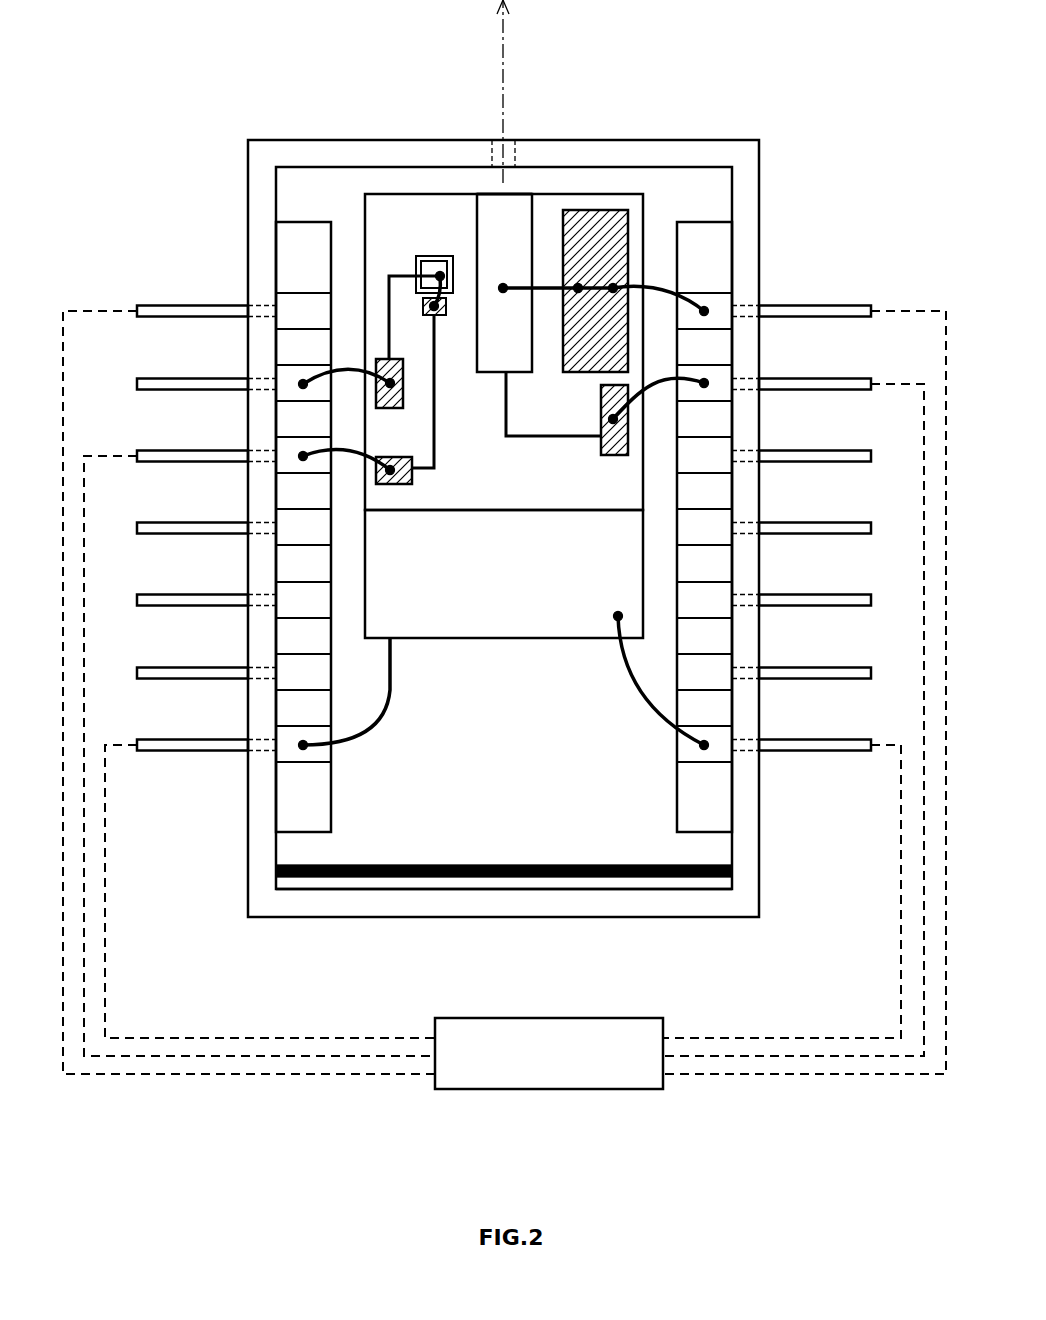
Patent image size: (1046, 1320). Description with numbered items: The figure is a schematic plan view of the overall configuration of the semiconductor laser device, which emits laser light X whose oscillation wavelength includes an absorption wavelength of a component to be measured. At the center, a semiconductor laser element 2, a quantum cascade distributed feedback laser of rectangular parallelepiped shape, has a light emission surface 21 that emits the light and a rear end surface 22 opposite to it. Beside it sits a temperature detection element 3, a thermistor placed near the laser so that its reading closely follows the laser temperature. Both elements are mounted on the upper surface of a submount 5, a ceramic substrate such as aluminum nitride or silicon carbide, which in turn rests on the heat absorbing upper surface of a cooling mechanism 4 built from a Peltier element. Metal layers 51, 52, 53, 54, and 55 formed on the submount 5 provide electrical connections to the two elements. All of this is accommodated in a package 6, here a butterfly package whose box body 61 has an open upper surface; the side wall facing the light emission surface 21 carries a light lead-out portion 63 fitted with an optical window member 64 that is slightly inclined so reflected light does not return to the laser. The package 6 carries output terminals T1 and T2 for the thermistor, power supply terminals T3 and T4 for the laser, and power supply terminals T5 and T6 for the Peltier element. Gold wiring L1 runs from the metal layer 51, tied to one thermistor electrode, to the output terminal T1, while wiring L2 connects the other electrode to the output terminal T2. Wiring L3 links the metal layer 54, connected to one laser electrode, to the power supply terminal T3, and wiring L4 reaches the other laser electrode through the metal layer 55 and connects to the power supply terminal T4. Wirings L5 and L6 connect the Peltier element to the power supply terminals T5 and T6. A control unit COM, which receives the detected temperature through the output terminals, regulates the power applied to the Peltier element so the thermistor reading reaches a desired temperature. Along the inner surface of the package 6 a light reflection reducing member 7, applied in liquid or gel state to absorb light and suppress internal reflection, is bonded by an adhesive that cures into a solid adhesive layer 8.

The semiconductor laser element 2 is at (520, 194).
The light emission surface 21 is at (487, 194).
The rear end surface 22 is at (490, 372).
The temperature detection element 3 is at (435, 256).
The cooling mechanism 4 is at (503, 640).
The submount 5 is at (520, 510).
The metal layer 51 is at (403, 395).
The metal layer 52 is at (447, 312).
The metal layer 53 is at (395, 484).
The metal layer 54 is at (612, 455).
The metal layer 55 is at (608, 210).
The package 6 is at (332, 140).
The box body 61 is at (275, 140).
The light lead-out portion 63 is at (492, 153).
The optical window member 64 is at (510, 140).
The light reflection reducing member 7 is at (457, 865).
The adhesive layer 8 is at (735, 883).
The laser light X is at (500, 45).
The wiring for temperature detection L1 is at (347, 367).
The wiring for temperature detection L2 is at (345, 432).
The wiring for the semiconductor laser element L3 is at (655, 375).
The wiring for the semiconductor laser element L4 is at (563, 278).
The wiring for the Peltier element L5 is at (640, 712).
The wiring for the Peltier element L6 is at (388, 705).
The output terminal T1 is at (287, 383).
The output terminal T2 is at (292, 461).
The power supply terminal T3 is at (718, 392).
The power supply terminal T4 is at (718, 318).
The power supply terminal T5 is at (690, 755).
The power supply terminal T6 is at (318, 754).
The control unit COM is at (548, 1018).